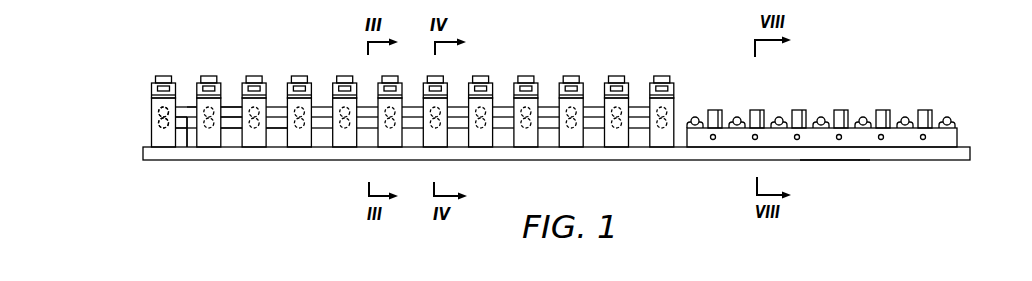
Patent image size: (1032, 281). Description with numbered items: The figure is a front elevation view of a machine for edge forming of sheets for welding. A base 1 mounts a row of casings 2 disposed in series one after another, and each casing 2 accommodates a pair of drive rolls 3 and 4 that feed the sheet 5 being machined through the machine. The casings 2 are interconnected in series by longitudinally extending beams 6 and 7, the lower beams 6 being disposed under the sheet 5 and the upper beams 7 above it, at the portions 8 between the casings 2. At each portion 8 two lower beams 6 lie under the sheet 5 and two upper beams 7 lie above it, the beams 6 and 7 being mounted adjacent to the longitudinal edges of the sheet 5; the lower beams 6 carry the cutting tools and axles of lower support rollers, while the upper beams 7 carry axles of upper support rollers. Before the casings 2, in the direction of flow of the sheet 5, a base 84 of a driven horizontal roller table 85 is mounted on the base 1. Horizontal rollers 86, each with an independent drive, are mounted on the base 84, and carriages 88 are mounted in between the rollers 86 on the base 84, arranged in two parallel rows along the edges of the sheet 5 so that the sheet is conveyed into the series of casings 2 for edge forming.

The base 1 is at (545, 167).
The casing 2 is at (413, 104).
The drive roll 3 is at (143, 103).
The drive roll 4 is at (143, 126).
The sheet being machined 5 is at (231, 92).
The lower longitudinally extending beam 6 is at (172, 157).
The upper longitudinally extending beam 7 is at (194, 152).
The portion between the casings 8 is at (254, 161).
The base of driven horizontal roller table 84 is at (848, 134).
The driven horizontal roller table 85 is at (836, 179).
The horizontal roller 86 is at (846, 110).
The carriage 88 is at (835, 102).